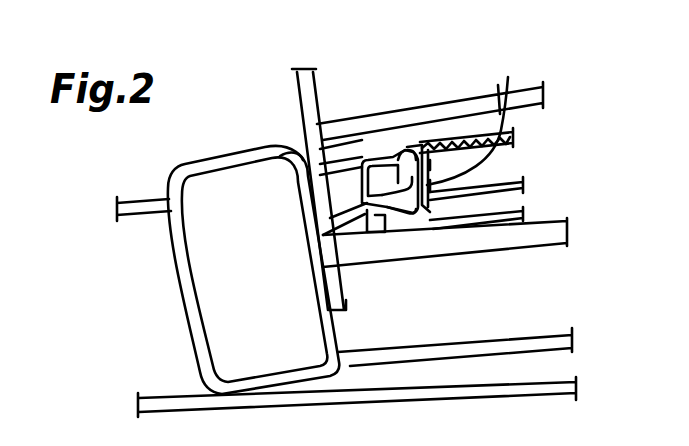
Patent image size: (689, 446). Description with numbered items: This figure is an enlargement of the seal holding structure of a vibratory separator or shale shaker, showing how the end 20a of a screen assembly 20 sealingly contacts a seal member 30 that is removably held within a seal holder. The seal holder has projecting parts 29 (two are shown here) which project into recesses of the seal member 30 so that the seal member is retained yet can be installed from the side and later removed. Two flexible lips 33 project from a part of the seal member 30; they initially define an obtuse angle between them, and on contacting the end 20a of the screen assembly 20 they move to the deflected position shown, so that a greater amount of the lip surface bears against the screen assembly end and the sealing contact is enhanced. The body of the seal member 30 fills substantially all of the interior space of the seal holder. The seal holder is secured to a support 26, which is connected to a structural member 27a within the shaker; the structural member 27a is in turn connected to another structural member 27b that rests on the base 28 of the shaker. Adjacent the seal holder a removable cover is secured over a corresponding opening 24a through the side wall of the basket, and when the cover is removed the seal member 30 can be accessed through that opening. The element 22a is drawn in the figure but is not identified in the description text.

The screen assembly 20 is at (497, 188).
The end of the screen assembly 20a is at (430, 99).
The seal lip 22a is at (280, 156).
The opening 24a is at (357, 173).
The support 26 is at (370, 234).
The structural member 27a is at (297, 88).
The structural member 27b is at (170, 188).
The base 28 is at (162, 402).
The projecting part 29 is at (402, 150).
The seal member 30 is at (382, 150).
The lips 33 is at (418, 148).